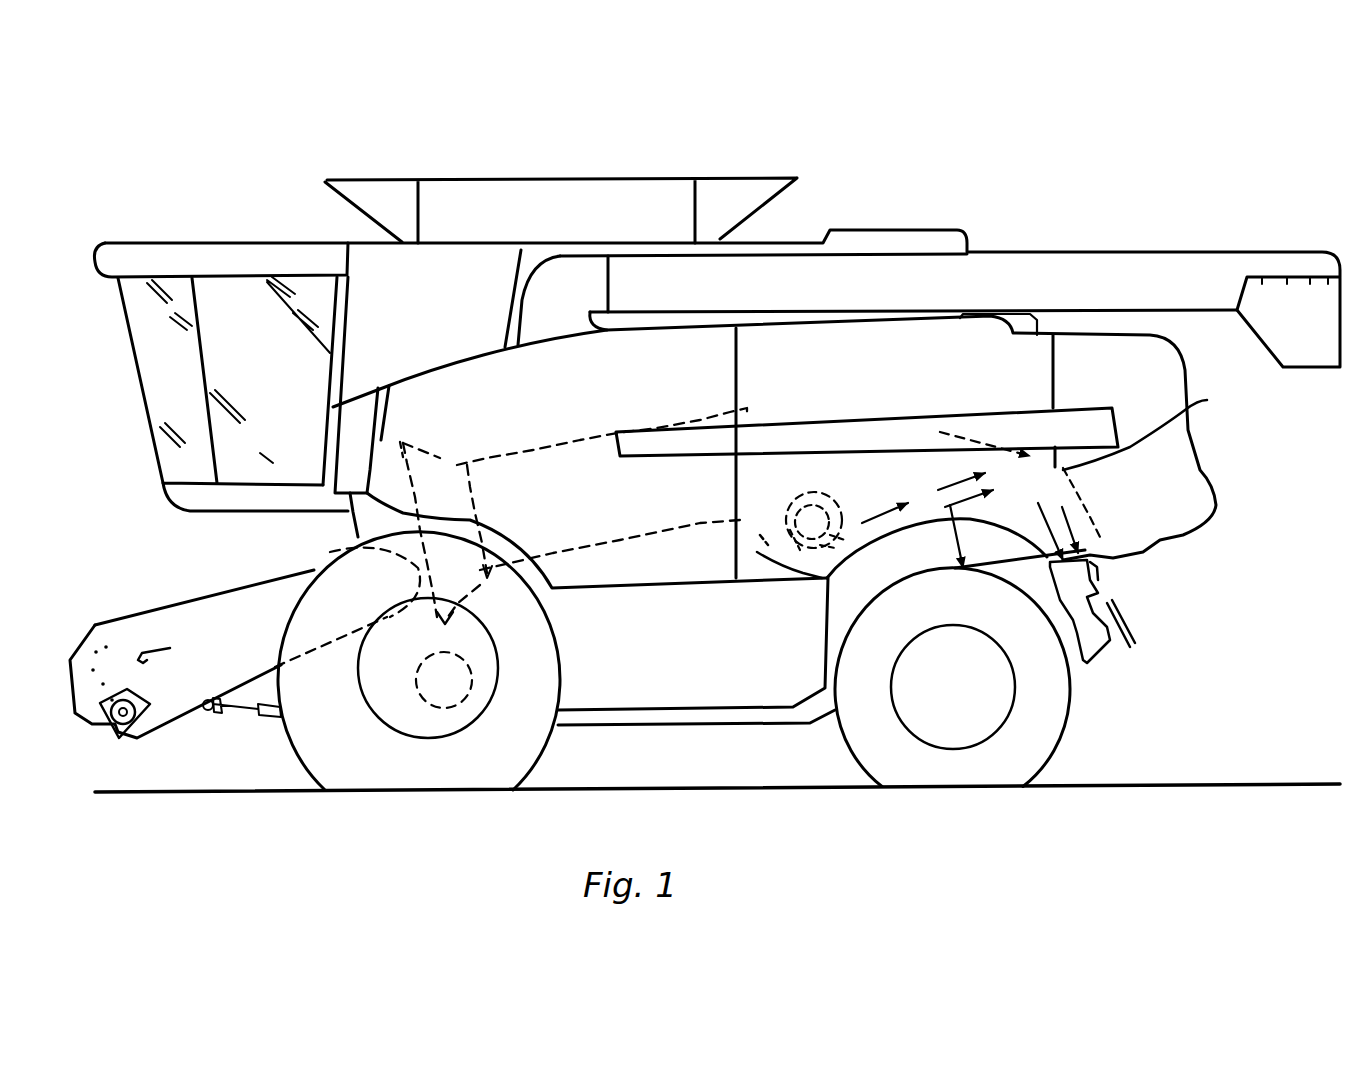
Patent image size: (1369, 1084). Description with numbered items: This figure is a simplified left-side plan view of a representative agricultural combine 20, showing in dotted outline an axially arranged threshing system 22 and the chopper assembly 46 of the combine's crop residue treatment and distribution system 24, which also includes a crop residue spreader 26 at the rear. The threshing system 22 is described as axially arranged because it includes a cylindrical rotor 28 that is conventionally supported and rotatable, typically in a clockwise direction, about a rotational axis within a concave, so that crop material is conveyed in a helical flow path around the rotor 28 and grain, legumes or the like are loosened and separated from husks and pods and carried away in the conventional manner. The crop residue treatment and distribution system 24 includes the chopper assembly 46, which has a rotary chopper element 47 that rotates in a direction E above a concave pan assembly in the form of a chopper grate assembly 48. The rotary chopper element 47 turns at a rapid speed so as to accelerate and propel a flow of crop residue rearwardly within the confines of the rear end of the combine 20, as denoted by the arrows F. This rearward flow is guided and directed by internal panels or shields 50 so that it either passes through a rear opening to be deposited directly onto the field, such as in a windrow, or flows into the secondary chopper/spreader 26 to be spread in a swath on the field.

The agricultural combine 20 is at (1160, 222).
The axially arranged threshing system 22 is at (525, 447).
The crop residue treatment and distribution system 24 is at (838, 470).
The crop residue spreader 26 is at (1108, 667).
The cylindrical rotor 28 is at (587, 553).
The chopper assembly 46 is at (798, 492).
The rotary chopper element 47 is at (825, 497).
The chopper grate assembly 48 is at (785, 552).
The shields 50 is at (1190, 408).
The direction of rotation E is at (813, 548).
The arrows denoting rearward flow of crop residue F is at (1065, 527).